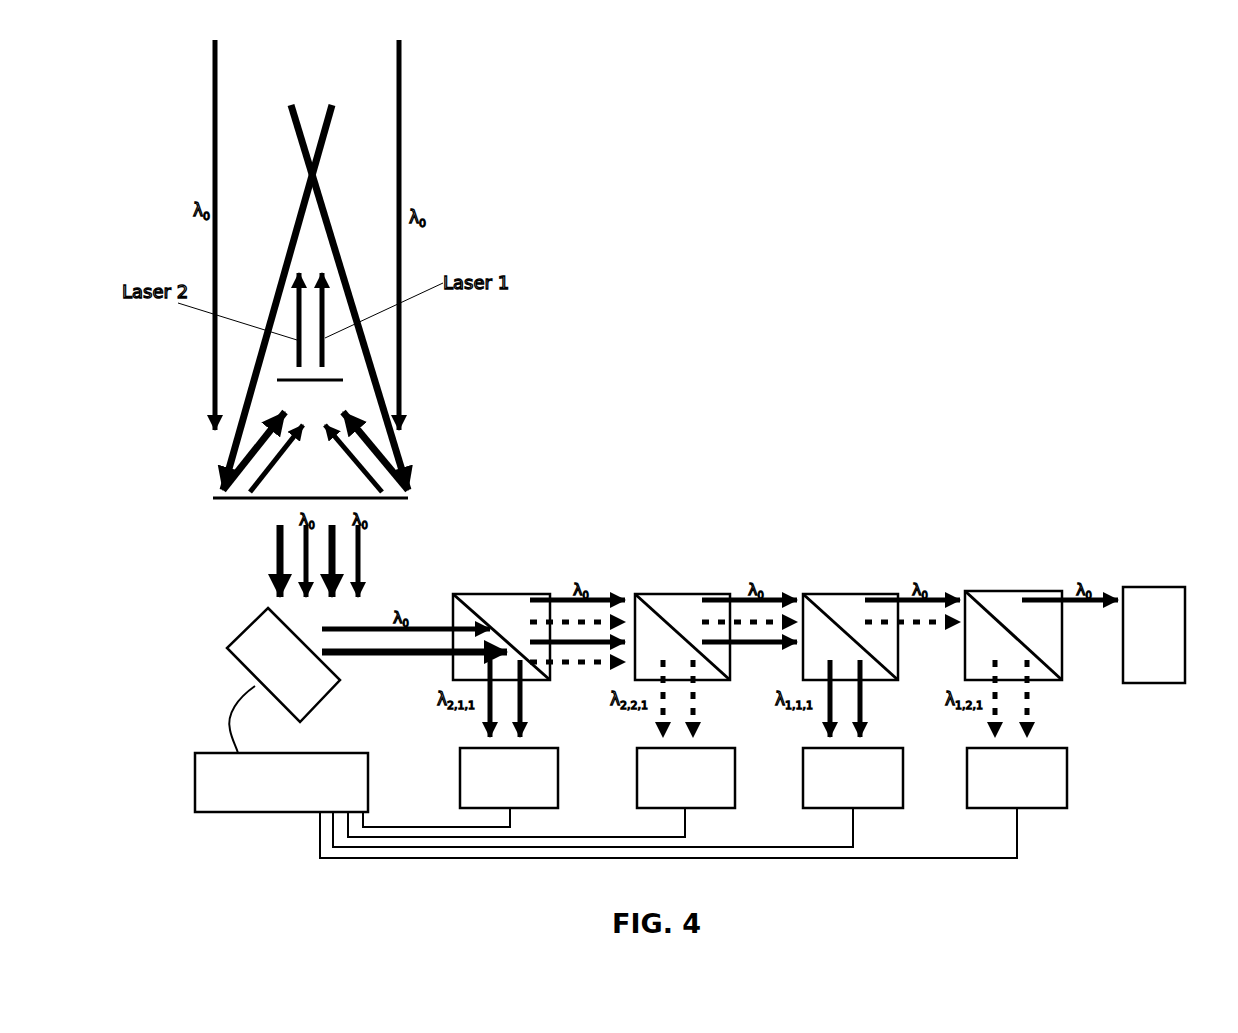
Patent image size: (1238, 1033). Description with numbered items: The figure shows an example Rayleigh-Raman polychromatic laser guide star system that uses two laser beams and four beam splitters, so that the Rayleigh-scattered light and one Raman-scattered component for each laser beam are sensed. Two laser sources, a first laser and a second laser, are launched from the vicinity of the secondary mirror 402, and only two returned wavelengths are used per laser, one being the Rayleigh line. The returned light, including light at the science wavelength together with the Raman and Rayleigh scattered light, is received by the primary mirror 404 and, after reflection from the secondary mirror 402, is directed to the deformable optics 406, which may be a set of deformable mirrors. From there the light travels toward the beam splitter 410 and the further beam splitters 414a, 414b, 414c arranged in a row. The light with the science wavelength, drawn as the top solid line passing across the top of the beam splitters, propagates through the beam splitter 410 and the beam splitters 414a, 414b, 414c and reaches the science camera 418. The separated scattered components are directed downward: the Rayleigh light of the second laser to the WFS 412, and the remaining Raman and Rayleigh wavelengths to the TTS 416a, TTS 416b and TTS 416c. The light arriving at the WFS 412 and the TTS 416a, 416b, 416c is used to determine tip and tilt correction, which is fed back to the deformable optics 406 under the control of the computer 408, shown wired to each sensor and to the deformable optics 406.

The secondary mirror 402 is at (297, 385).
The primary mirror 404 is at (227, 500).
The deformable optics 406 is at (250, 657).
The computer 408 is at (232, 800).
The beam splitter 410 is at (490, 603).
The WFS 412 is at (470, 783).
The beam splitter 414a is at (667, 602).
The beam splitter 414b is at (832, 603).
The beam splitter 414c is at (997, 600).
The TTS 416a is at (652, 782).
The TTS 416b is at (822, 782).
The TTS 416c is at (987, 790).
The science camera 418 is at (1160, 677).